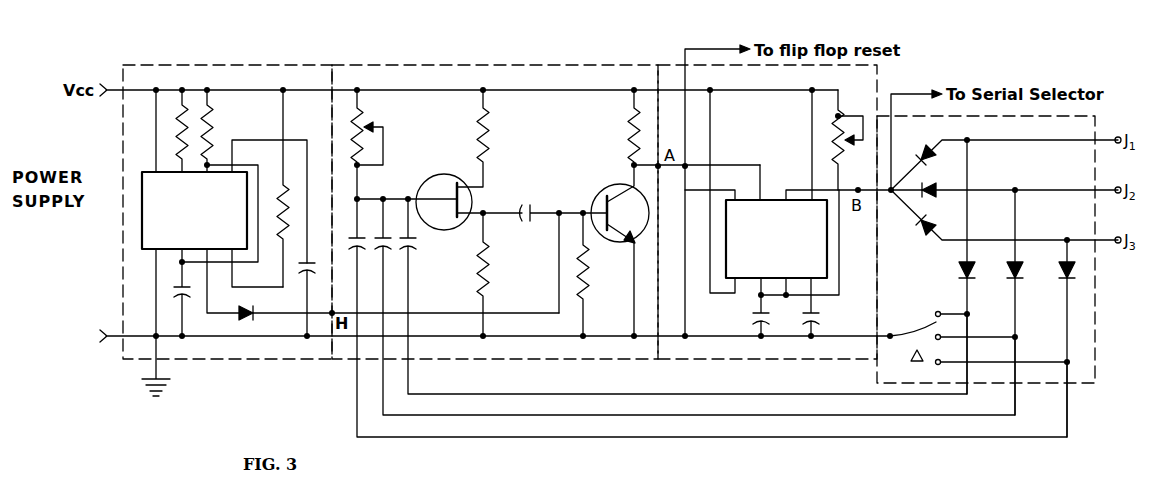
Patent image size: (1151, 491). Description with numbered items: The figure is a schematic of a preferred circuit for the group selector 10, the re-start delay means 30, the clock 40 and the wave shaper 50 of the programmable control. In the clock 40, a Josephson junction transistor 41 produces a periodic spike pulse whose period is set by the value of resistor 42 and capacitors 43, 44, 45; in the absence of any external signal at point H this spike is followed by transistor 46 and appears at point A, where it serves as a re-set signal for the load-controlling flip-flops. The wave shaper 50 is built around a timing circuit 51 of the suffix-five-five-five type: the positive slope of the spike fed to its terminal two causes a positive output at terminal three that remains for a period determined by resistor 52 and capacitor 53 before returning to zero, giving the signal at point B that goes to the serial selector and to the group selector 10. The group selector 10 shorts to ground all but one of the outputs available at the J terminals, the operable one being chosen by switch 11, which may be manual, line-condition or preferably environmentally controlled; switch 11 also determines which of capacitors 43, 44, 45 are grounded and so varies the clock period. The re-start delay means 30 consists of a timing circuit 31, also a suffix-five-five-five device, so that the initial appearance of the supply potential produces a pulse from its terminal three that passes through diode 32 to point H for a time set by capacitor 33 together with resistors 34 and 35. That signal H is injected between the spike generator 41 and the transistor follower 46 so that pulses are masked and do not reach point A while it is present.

The group selector 10 is at (1092, 371).
The switch 11 is at (922, 325).
The re-start delay means 30 is at (237, 362).
The timing circuit 31 is at (142, 206).
The diode 32 is at (251, 318).
The capacitor 33 is at (180, 293).
The resistor 34 is at (213, 133).
The resistor 35 is at (178, 132).
The clock 40 is at (527, 360).
The Josephson junction transistor 41 is at (445, 174).
The resistor 42 is at (373, 127).
The capacitor 43 is at (358, 250).
The capacitor 44 is at (385, 252).
The capacitor 45 is at (405, 252).
The transistor 46 is at (612, 190).
The wave shaper 50 is at (790, 360).
The timing circuit 51 is at (776, 196).
The resistor 52 is at (847, 143).
The capacitor 53 is at (752, 316).